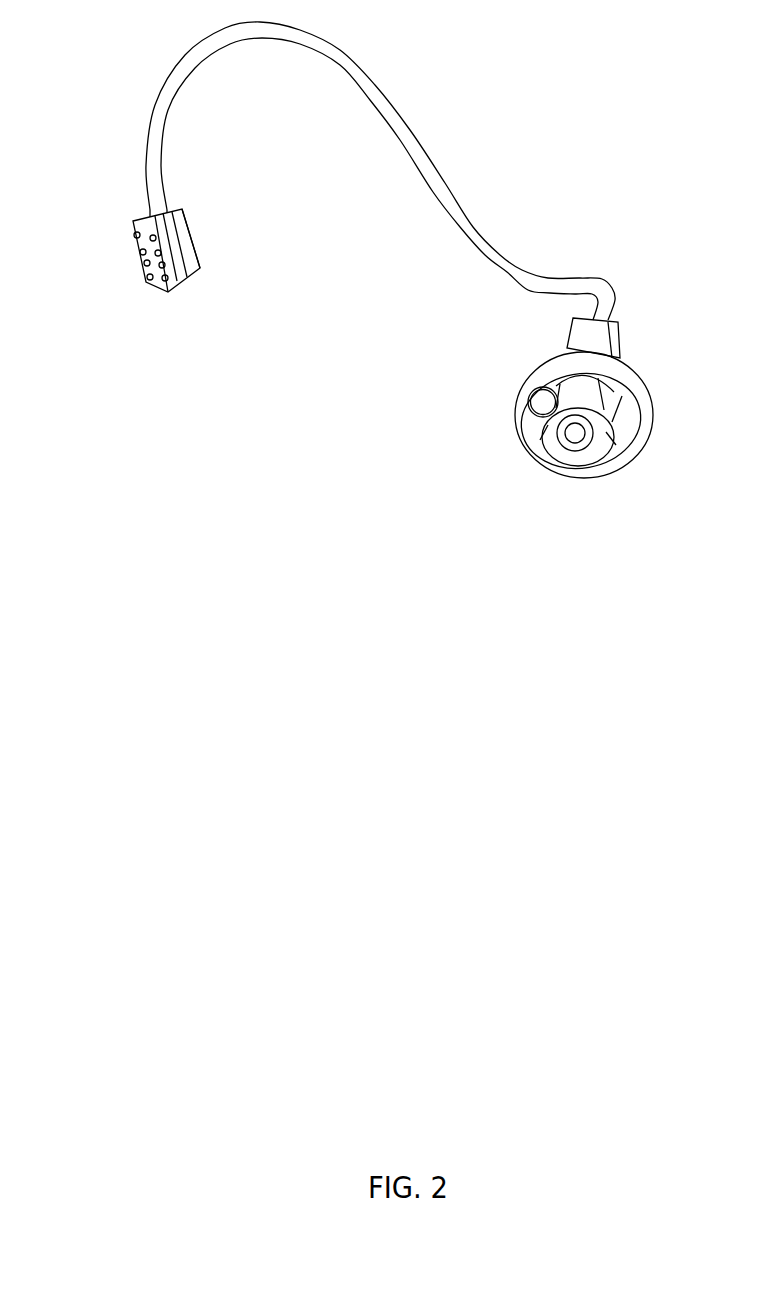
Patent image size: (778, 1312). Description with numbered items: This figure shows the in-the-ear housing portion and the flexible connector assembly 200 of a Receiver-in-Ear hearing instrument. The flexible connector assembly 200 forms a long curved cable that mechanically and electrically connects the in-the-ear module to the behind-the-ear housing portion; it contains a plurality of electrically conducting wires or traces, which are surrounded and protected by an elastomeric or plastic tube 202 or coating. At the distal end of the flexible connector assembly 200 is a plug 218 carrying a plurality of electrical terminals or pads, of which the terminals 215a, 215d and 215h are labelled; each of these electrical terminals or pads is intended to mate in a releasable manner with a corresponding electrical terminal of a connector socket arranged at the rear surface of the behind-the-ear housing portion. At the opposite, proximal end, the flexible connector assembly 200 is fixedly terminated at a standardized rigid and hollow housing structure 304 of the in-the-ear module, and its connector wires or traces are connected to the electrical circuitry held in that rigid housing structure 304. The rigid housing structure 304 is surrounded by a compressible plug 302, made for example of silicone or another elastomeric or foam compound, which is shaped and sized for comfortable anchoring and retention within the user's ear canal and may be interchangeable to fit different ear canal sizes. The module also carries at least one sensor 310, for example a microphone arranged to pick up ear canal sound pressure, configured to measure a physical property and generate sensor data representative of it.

The flexible connector assembly 200 is at (346, 250).
The elastomeric or plastic tube 202 is at (411, 131).
The plug 218 is at (187, 222).
The electrical terminal or pad 215a is at (132, 233).
The electrical terminal or pad 215d is at (147, 280).
The electrical terminal or pad 215h is at (166, 281).
The rigid housing structure 304 is at (570, 335).
The compressible plug 302 is at (518, 395).
The sensor 310 is at (525, 415).